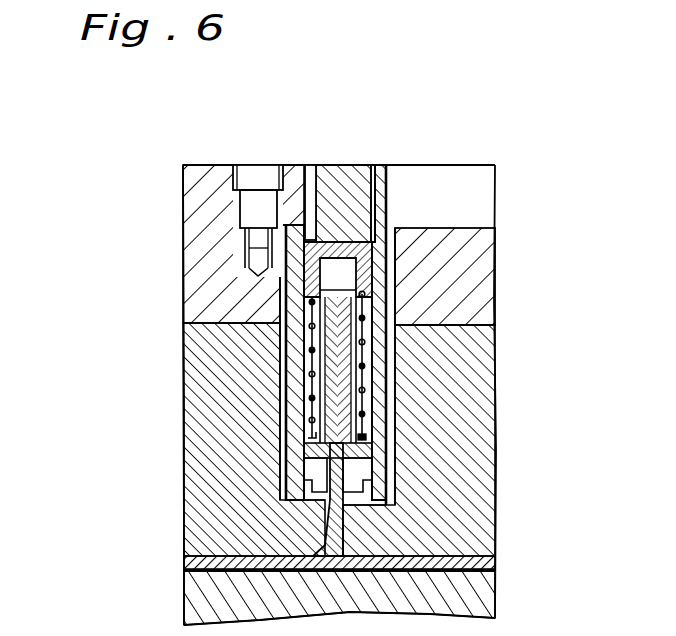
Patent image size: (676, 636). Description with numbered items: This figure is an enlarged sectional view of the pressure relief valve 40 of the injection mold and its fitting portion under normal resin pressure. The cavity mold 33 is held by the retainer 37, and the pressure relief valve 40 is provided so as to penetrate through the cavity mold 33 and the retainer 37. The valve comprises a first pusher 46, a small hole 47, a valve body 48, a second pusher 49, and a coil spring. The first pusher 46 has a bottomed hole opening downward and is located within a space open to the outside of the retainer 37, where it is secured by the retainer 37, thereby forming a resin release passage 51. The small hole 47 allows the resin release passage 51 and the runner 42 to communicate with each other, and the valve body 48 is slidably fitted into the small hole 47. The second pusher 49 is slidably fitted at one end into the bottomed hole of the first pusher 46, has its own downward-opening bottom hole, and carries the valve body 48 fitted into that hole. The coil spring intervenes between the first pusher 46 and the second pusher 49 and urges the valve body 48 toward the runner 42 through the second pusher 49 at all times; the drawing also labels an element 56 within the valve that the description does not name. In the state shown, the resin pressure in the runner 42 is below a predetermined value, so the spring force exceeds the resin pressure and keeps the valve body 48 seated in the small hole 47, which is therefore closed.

The pressure relief valve 40 is at (358, 144).
The first pusher 46 is at (311, 165).
The retainer 37 is at (460, 255).
The resin release passage 51 is at (392, 310).
The heater element 56 is at (380, 382).
The cavity mold 33 is at (470, 428).
The valve body 48 is at (375, 472).
The small hole 47 is at (330, 540).
The runner 42 is at (478, 566).
The second pusher 49 is at (323, 447).